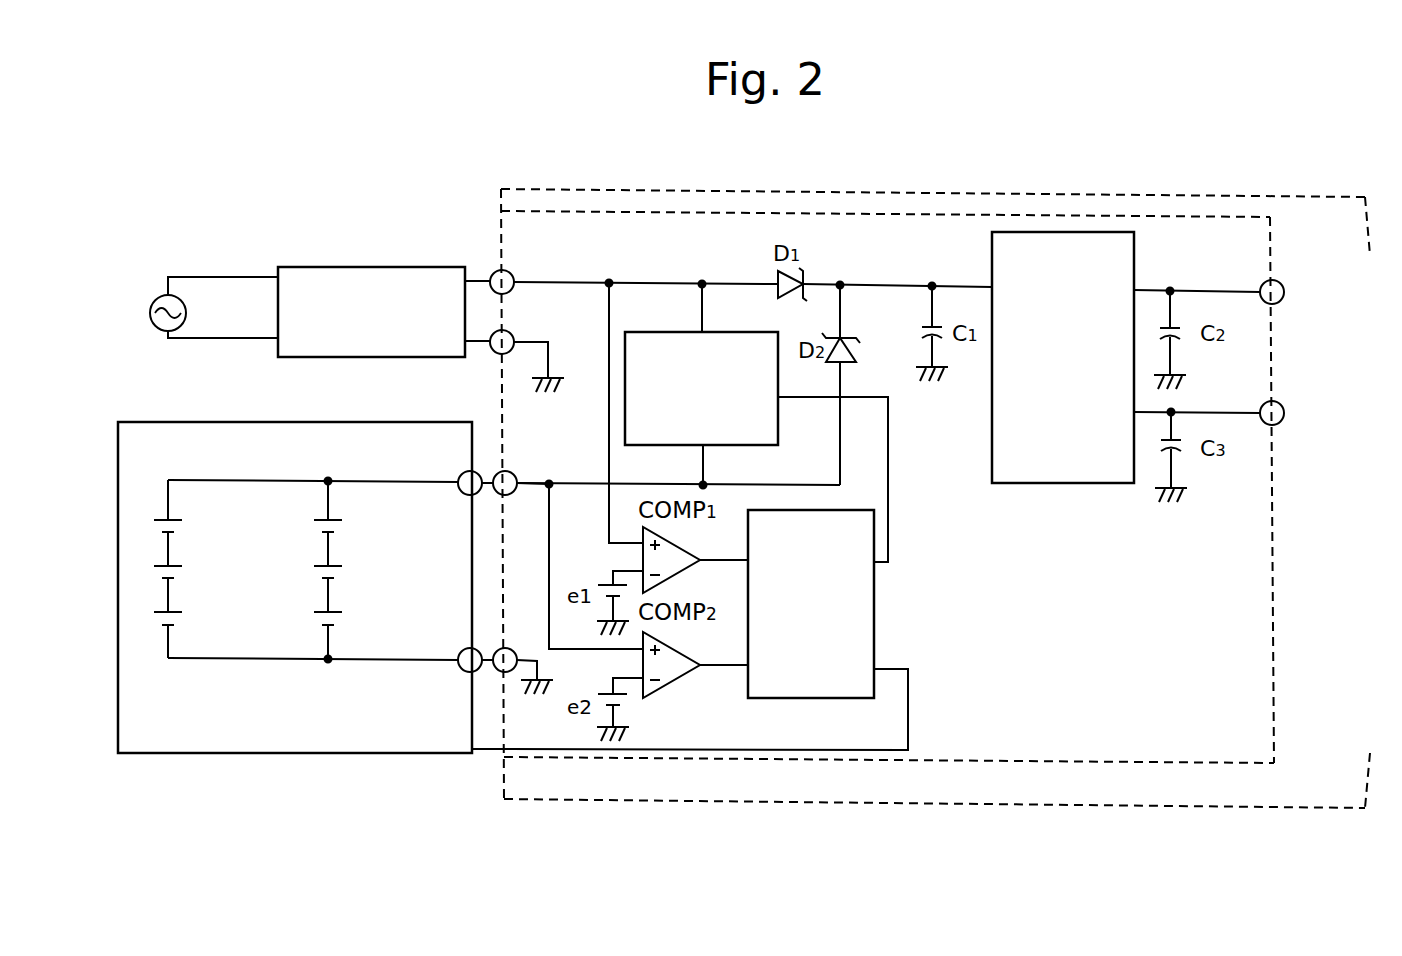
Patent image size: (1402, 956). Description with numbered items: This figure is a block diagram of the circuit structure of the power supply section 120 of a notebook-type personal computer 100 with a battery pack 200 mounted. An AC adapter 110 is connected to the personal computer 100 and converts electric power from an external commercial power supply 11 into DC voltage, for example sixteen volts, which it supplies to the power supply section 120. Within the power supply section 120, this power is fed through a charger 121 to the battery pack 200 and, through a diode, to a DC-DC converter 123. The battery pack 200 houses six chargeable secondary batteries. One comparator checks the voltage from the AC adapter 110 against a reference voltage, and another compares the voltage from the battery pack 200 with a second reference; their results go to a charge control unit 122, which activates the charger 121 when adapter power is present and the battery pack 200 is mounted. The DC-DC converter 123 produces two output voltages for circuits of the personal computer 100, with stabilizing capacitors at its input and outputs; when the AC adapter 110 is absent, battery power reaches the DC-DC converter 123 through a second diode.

The commercial power supply 11 is at (152, 300).
The personal computer 100 is at (1270, 197).
The AC adapter 110 is at (364, 267).
The power supply section 120 is at (917, 211).
The charger 121 is at (662, 332).
The charge control unit 122 is at (874, 598).
The DC-DC converter 123 is at (1134, 265).
The battery pack 200 is at (207, 422).